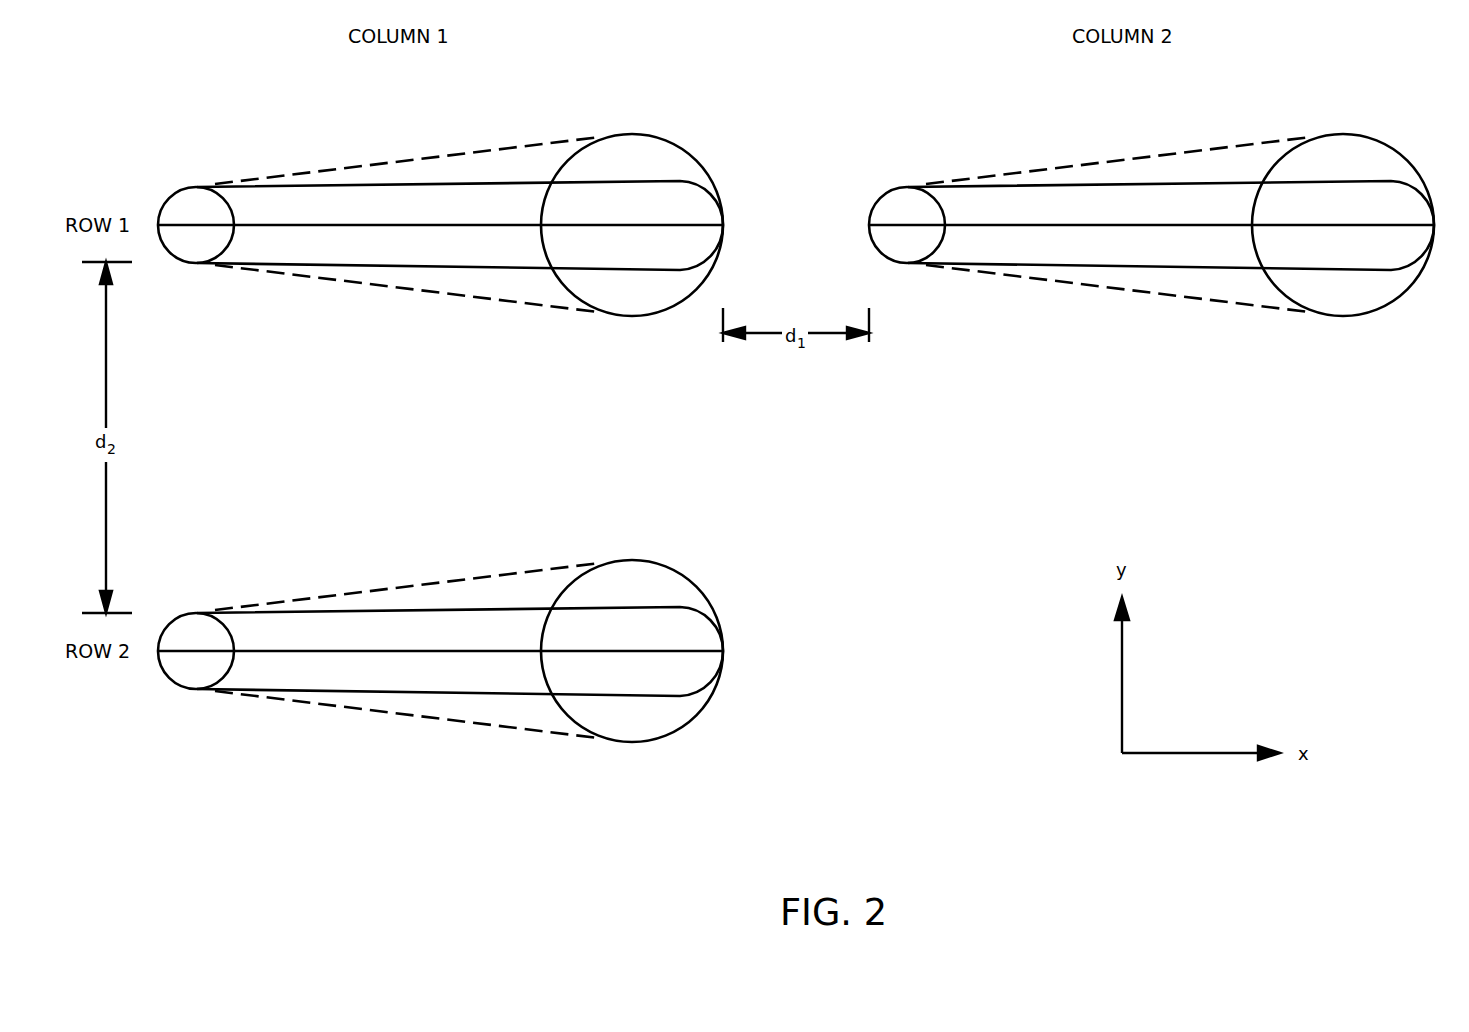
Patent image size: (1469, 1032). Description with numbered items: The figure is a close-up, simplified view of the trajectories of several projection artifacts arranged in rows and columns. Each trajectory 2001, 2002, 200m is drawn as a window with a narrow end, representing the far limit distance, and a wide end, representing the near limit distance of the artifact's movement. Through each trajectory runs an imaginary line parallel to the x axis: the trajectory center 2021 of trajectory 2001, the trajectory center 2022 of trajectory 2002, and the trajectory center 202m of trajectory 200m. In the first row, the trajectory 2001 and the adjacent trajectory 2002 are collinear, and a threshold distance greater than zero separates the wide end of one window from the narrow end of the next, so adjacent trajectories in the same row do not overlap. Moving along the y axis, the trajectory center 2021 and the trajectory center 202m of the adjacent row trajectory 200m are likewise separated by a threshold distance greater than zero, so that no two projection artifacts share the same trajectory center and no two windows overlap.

The trajectory 2001 is at (358, 183).
The trajectory center 2021 is at (388, 227).
The trajectory 2002 is at (1151, 232).
The trajectory center 2022 is at (1151, 299).
The trajectory 200m is at (440, 660).
The trajectory center 202m is at (440, 725).